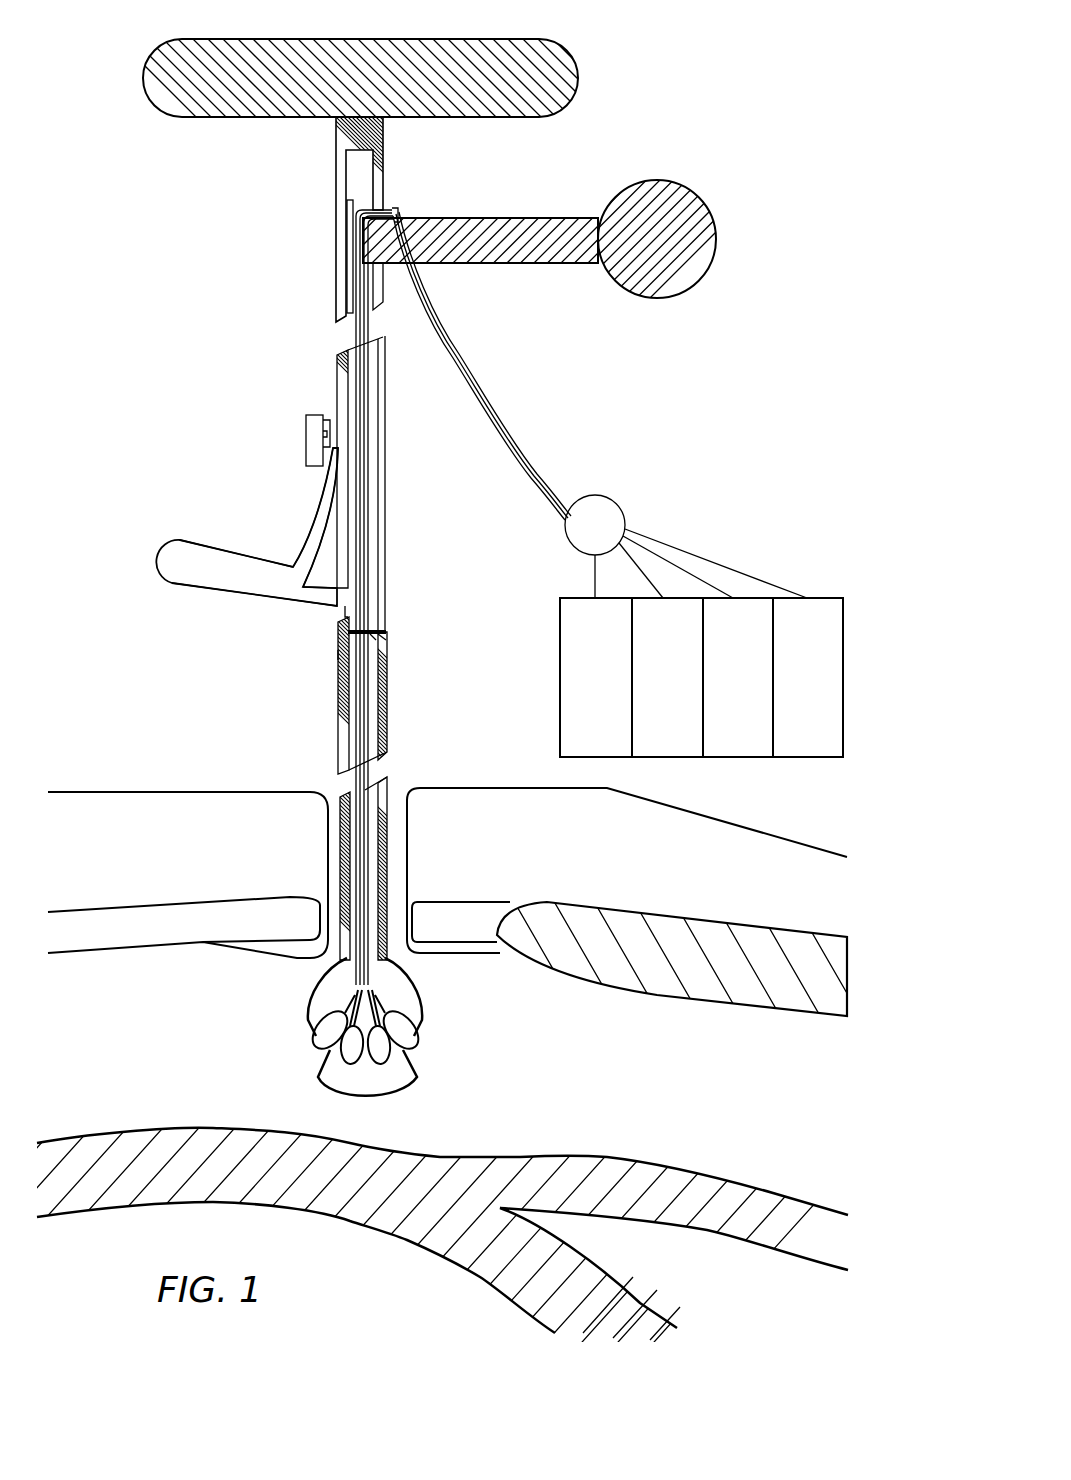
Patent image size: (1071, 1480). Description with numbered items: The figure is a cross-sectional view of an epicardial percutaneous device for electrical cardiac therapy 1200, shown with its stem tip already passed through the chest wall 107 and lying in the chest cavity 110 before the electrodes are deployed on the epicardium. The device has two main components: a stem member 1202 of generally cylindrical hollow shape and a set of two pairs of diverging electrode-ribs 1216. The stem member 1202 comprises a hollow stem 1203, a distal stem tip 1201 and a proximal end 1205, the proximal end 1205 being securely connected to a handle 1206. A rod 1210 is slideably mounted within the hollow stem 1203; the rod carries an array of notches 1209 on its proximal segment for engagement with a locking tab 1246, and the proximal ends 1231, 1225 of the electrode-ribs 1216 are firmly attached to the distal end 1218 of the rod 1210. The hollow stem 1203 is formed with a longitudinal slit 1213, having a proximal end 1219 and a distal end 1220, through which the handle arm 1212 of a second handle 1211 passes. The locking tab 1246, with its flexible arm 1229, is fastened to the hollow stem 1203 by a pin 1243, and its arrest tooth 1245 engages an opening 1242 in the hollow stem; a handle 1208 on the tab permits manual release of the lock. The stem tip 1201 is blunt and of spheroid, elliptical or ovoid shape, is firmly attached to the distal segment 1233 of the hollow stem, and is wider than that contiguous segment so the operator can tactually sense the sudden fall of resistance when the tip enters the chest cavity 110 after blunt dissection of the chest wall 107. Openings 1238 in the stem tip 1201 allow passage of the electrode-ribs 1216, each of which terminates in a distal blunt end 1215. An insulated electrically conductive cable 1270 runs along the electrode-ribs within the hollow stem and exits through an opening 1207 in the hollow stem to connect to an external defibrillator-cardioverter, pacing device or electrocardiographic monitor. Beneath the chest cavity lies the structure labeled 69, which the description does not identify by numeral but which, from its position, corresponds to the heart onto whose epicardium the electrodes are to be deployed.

The handle 1206 is at (552, 37).
The proximal end 1205 is at (378, 152).
The array of notches 1209 is at (347, 230).
The opening 1207 is at (378, 207).
The proximal end 1219 is at (398, 209).
The handle arm 1212 is at (505, 225).
The handle 1211 is at (622, 221).
The insulated electrically conductive cable 1270 is at (618, 484).
The epicardial percutaneous device for electrical cardiac therapy 1200 is at (250, 243).
The rod 1210 is at (348, 353).
The stem member 1202 is at (340, 382).
The longitudinal slit 1213 is at (385, 477).
The pin 1243 is at (312, 430).
The handle 1208 is at (185, 573).
The locking tab 1246 is at (300, 548).
The flexible arm 1229 is at (323, 505).
The arrest tooth 1245 is at (328, 603).
The distal end 1220 is at (390, 628).
The distal end 1218 is at (387, 634).
The proximal ends 1231 is at (373, 636).
The opening 1242 is at (337, 617).
The proximal ends 1225 is at (340, 655).
The hollow stem 1203 is at (340, 715).
The diverging electrode-ribs 1216 is at (368, 772).
The distal segment 1233 is at (390, 875).
The chest wall 107 is at (157, 810).
The stem tip 1201 is at (313, 997).
The distal blunt end 1215 is at (407, 1033).
The openings 1238 is at (407, 1067).
The chest cavity 110 is at (256, 1066).
The heart wall 69 is at (127, 1118).